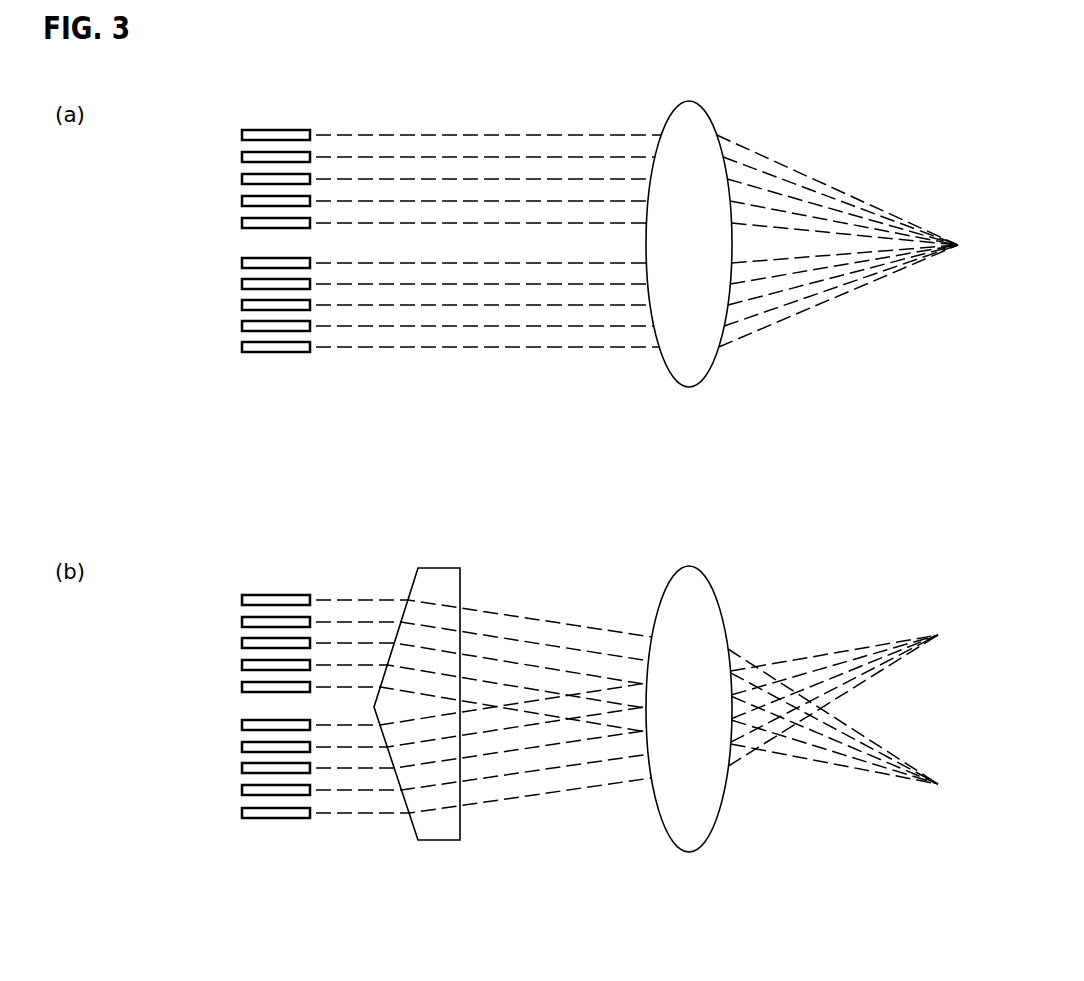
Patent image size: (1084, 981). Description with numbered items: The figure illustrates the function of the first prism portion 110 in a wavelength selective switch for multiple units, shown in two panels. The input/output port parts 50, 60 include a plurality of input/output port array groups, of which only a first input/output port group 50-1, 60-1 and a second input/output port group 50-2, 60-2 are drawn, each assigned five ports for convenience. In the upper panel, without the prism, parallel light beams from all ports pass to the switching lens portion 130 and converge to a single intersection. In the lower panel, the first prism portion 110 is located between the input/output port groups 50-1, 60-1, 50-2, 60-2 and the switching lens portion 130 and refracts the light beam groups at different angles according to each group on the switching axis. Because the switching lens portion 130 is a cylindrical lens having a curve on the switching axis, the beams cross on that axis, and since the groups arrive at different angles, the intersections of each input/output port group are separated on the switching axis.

The input/output port part 50 is at (140, 337).
The input/output port part 60 is at (188, 474).
The first input/output port group 50-1 is at (235, 127).
The first input/output port group 60-1 is at (224, 411).
The second input/output port group 50-2 is at (235, 255).
The second input/output port group 60-2 is at (224, 538).
The first prism portion 110 is at (438, 830).
The switching lens portion 130 is at (697, 362).